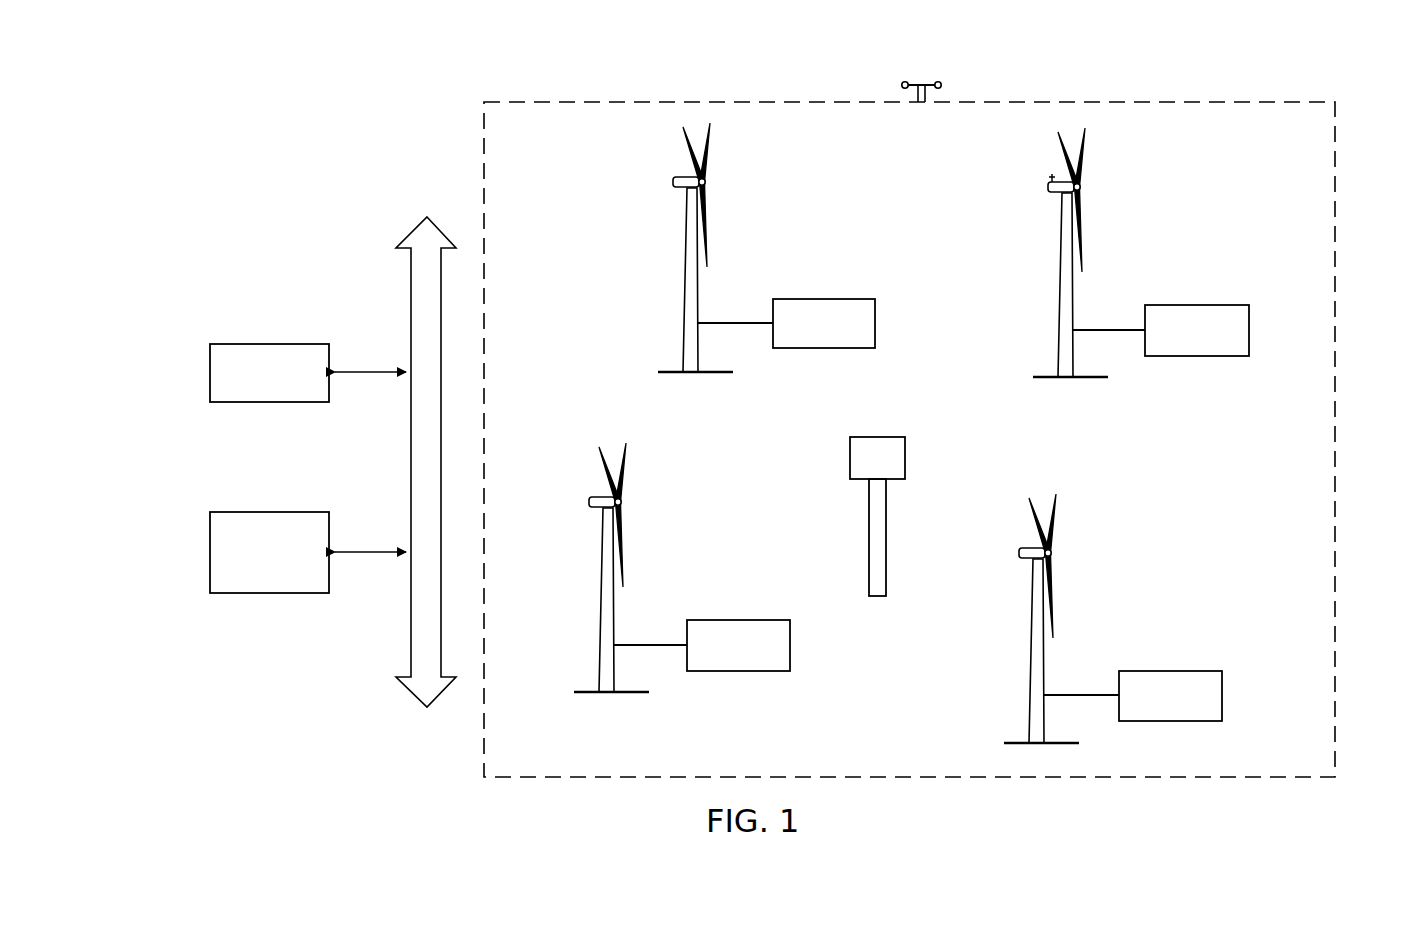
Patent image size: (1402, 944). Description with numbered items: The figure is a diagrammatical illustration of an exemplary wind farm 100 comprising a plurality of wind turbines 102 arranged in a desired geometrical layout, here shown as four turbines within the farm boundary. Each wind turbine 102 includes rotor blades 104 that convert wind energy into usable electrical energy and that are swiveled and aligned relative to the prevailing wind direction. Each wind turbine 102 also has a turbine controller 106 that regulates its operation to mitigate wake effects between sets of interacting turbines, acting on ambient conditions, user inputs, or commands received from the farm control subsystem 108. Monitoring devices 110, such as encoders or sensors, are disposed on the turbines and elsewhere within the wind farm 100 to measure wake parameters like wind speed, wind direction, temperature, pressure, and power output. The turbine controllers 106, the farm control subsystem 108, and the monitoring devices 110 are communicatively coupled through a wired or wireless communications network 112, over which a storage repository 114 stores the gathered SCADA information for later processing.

The wind farm 100 is at (430, 72).
The wind turbine 102 is at (672, 180).
The rotor blades 104 is at (708, 206).
The turbine controller 106 is at (877, 320).
The farm control subsystem 108 is at (270, 512).
The monitoring device 110 is at (902, 85).
The communications network 112 is at (410, 285).
The storage repository 114 is at (270, 344).